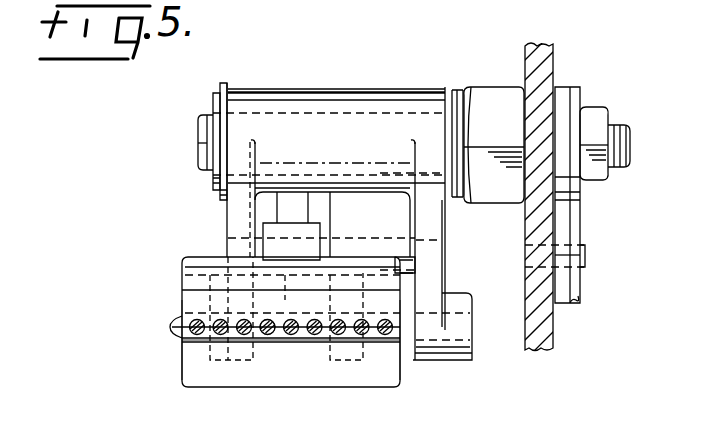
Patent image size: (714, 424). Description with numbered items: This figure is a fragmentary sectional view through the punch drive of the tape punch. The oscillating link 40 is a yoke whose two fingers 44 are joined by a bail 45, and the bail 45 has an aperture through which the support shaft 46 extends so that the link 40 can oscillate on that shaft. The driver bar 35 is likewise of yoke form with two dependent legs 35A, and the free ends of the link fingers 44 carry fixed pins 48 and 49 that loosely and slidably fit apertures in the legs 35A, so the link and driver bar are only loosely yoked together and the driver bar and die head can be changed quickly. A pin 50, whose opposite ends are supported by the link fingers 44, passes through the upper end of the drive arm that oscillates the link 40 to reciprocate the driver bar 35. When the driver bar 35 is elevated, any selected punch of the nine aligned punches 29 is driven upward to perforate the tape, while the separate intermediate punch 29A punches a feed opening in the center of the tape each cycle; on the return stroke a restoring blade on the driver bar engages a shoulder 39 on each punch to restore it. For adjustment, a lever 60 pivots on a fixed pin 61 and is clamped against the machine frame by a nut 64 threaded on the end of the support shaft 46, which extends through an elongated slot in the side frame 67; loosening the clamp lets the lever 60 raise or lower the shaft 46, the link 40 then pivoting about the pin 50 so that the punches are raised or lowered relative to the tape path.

The punches 29 is at (196, 320).
The intermediate punch 29A is at (270, 336).
The driver bar 35 is at (402, 302).
The dependent legs 35A is at (193, 363).
The shoulder 39 is at (188, 340).
The oscillating link 40 is at (340, 87).
The link fingers 44 is at (229, 217).
The bail 45 is at (293, 86).
The support shaft 46 is at (202, 142).
The fixed pin 48 is at (172, 327).
The fixed pin 49 is at (467, 330).
The pin 50 is at (380, 244).
The lever 60 is at (582, 304).
The fixed pin 61 is at (585, 256).
The nut 64 is at (607, 113).
The side frame 67 is at (555, 64).